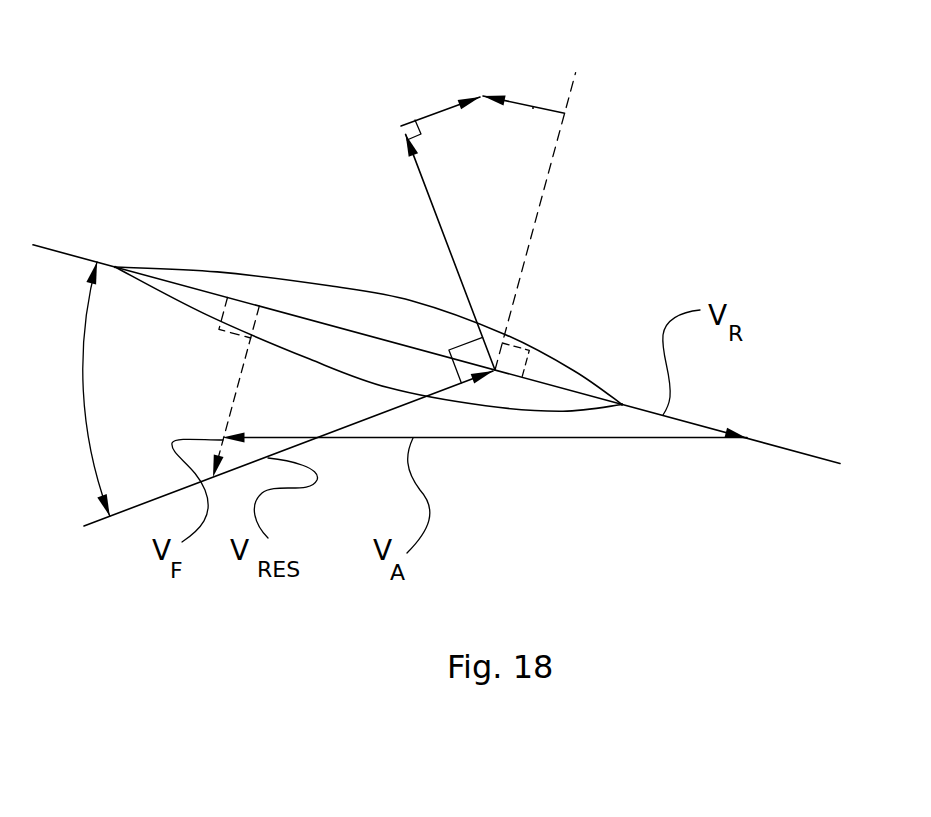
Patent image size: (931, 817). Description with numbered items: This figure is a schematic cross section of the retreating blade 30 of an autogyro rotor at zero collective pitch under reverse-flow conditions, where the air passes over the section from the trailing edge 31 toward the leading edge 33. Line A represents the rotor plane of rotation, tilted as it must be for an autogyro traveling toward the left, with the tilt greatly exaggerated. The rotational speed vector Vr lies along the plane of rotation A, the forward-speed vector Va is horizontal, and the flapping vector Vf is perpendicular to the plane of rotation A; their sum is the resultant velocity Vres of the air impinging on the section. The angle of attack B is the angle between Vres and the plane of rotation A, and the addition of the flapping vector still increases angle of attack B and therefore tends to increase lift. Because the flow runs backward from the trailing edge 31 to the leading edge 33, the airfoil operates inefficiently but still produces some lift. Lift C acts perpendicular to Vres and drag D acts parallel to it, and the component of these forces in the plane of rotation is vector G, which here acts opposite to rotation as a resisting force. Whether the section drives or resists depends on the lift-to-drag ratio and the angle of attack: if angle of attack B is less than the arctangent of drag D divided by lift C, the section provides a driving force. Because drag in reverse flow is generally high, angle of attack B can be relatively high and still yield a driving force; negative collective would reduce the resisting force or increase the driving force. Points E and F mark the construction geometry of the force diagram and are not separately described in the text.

The retreating blade 30 is at (585, 372).
The trailing edge 31 is at (115, 267).
The leading edge 33 is at (622, 405).
The rotor plane of rotation A is at (793, 450).
The angle of attack B is at (91, 389).
The lift C is at (424, 190).
The drag D is at (447, 108).
The perpendicular to chord E is at (565, 113).
The resultant force F is at (485, 97).
The in-plane force vector G is at (533, 108).